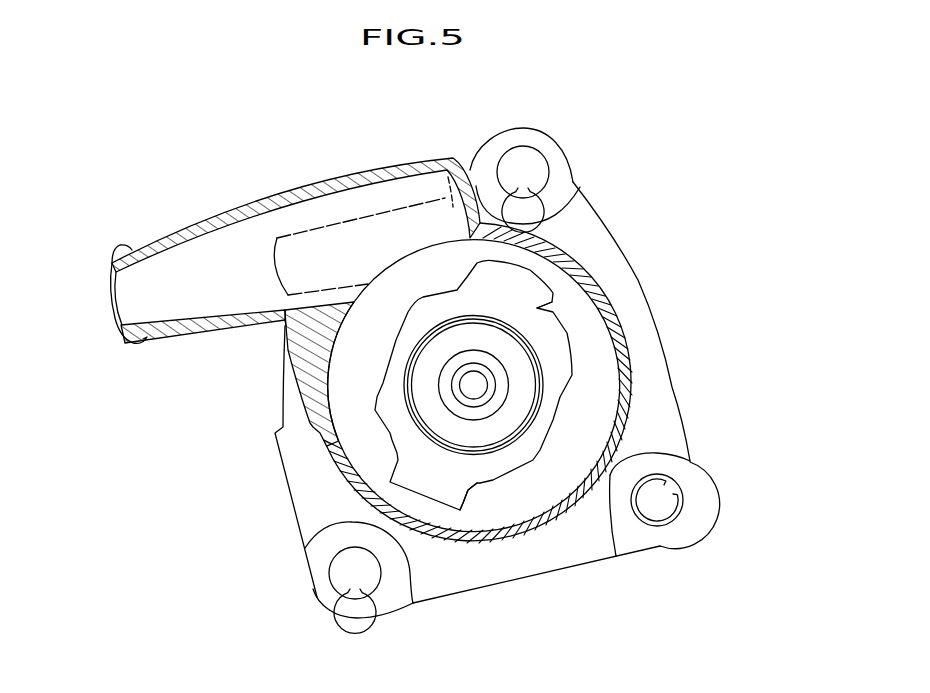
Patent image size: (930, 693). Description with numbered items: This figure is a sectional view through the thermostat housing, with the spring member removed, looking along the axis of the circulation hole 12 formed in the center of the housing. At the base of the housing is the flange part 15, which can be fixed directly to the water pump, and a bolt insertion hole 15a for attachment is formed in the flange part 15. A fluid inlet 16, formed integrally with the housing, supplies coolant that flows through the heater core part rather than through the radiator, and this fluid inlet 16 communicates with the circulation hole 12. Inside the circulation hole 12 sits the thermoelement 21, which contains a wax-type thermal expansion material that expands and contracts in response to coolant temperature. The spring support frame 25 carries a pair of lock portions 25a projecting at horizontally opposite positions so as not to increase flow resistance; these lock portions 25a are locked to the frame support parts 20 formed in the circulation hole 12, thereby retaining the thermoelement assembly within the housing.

The circulation hole 12 is at (588, 395).
The flange part 15 is at (688, 432).
The bolt insertion hole 15a is at (530, 175).
The fluid inlet 16 is at (127, 285).
The frame support part 20 is at (540, 236).
The thermoelement 21 is at (430, 385).
The spring support frame 25 is at (378, 427).
The lock portion 25a is at (535, 312).